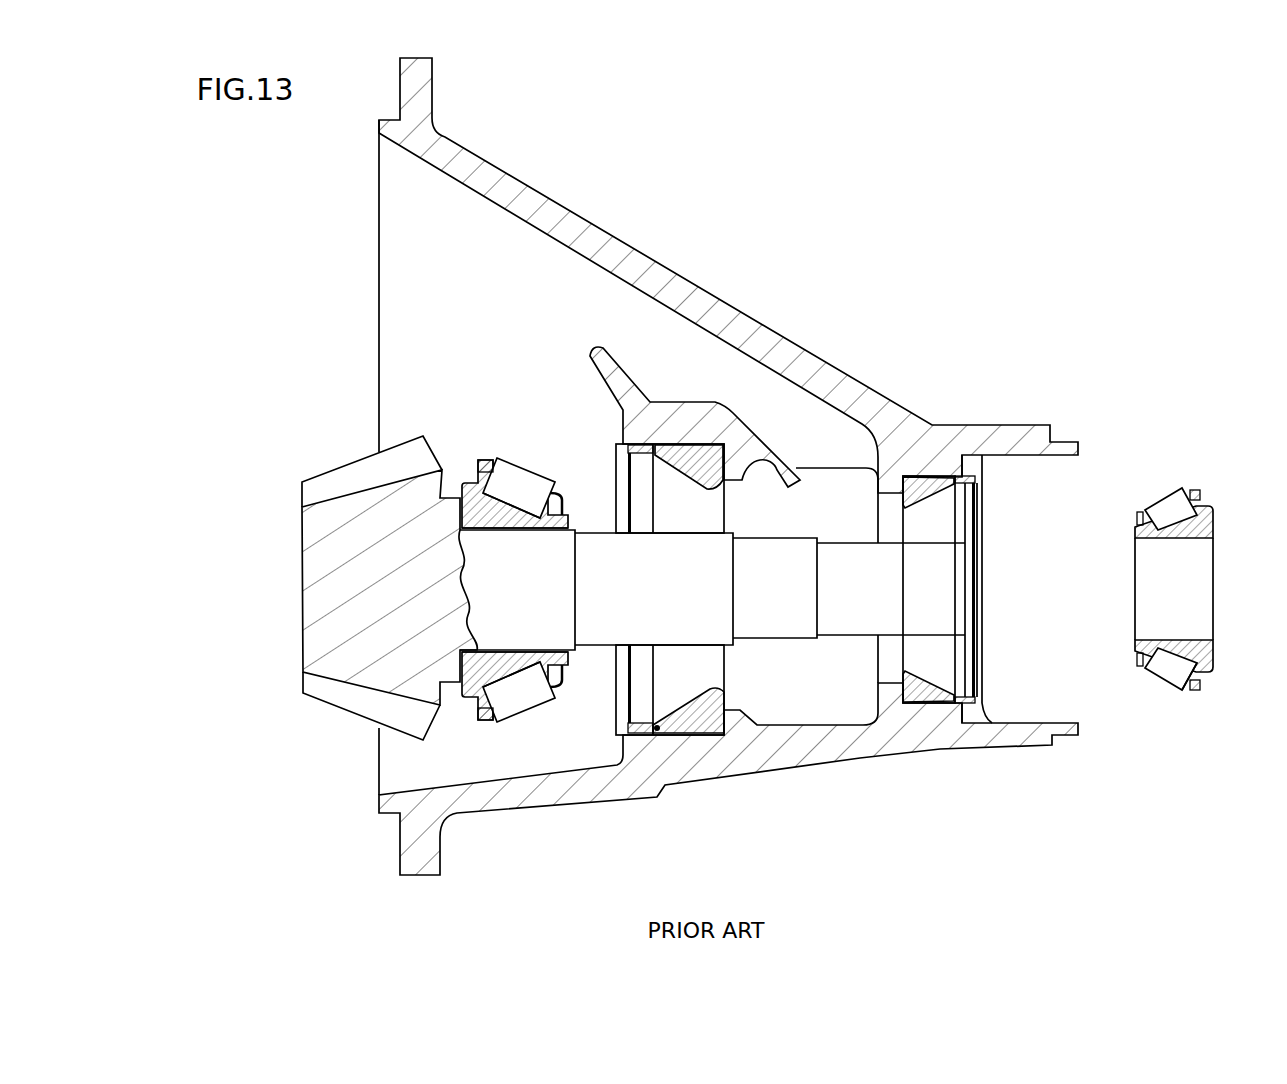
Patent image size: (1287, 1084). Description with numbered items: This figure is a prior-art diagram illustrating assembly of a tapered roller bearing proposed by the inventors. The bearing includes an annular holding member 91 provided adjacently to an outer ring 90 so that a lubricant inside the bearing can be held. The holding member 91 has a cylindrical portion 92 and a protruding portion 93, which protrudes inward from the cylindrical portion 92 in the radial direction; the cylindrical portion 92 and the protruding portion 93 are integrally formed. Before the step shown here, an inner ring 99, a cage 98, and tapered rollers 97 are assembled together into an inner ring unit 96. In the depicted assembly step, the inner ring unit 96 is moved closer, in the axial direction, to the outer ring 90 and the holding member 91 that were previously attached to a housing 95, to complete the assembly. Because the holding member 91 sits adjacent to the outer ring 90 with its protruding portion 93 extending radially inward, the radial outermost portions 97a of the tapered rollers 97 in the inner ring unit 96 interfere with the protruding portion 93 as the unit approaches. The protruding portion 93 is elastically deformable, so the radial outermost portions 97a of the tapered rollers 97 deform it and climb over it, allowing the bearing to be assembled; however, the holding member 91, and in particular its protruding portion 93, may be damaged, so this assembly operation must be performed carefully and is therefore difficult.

The outer ring 90 is at (689, 436).
The holding member 91 is at (640, 437).
The cylindrical portion 92 is at (650, 740).
The protruding portion 93 is at (627, 724).
The housing 95 is at (667, 425).
The inner ring unit 96 is at (538, 714).
The tapered rollers 97 is at (516, 480).
The radial outermost portions 97a is at (500, 720).
The cage 98 is at (484, 460).
The inner ring 99 is at (530, 503).